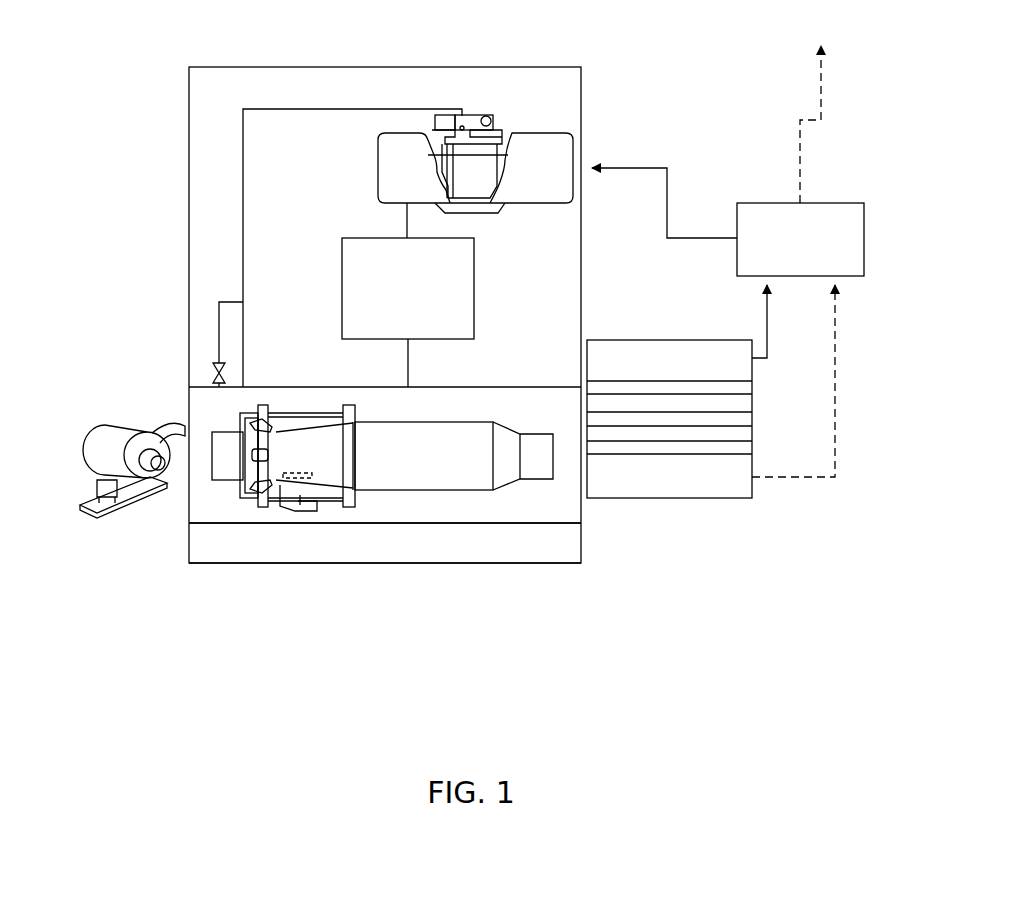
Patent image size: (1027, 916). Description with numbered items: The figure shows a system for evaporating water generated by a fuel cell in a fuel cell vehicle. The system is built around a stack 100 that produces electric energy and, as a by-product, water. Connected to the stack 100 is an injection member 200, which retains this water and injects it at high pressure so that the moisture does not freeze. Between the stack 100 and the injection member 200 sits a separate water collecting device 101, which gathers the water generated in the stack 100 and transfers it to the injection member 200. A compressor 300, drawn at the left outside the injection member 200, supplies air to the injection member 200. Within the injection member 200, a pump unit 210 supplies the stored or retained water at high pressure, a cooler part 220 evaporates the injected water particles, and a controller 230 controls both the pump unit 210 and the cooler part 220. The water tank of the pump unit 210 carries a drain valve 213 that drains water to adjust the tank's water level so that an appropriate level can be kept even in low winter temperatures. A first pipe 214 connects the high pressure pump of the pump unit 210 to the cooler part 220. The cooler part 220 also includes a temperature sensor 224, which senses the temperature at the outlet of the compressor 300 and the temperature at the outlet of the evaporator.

The stack 100 is at (716, 508).
The separate water collecting device 101 is at (865, 240).
The injection member 200 is at (111, 230).
The pump unit 210 is at (383, 172).
The drain valve 213 is at (213, 373).
The first pipe 214 is at (352, 109).
The cooler part 220 is at (307, 413).
The temperature sensor 224 is at (226, 551).
The controller 230 is at (342, 290).
The compressor 300 is at (79, 455).